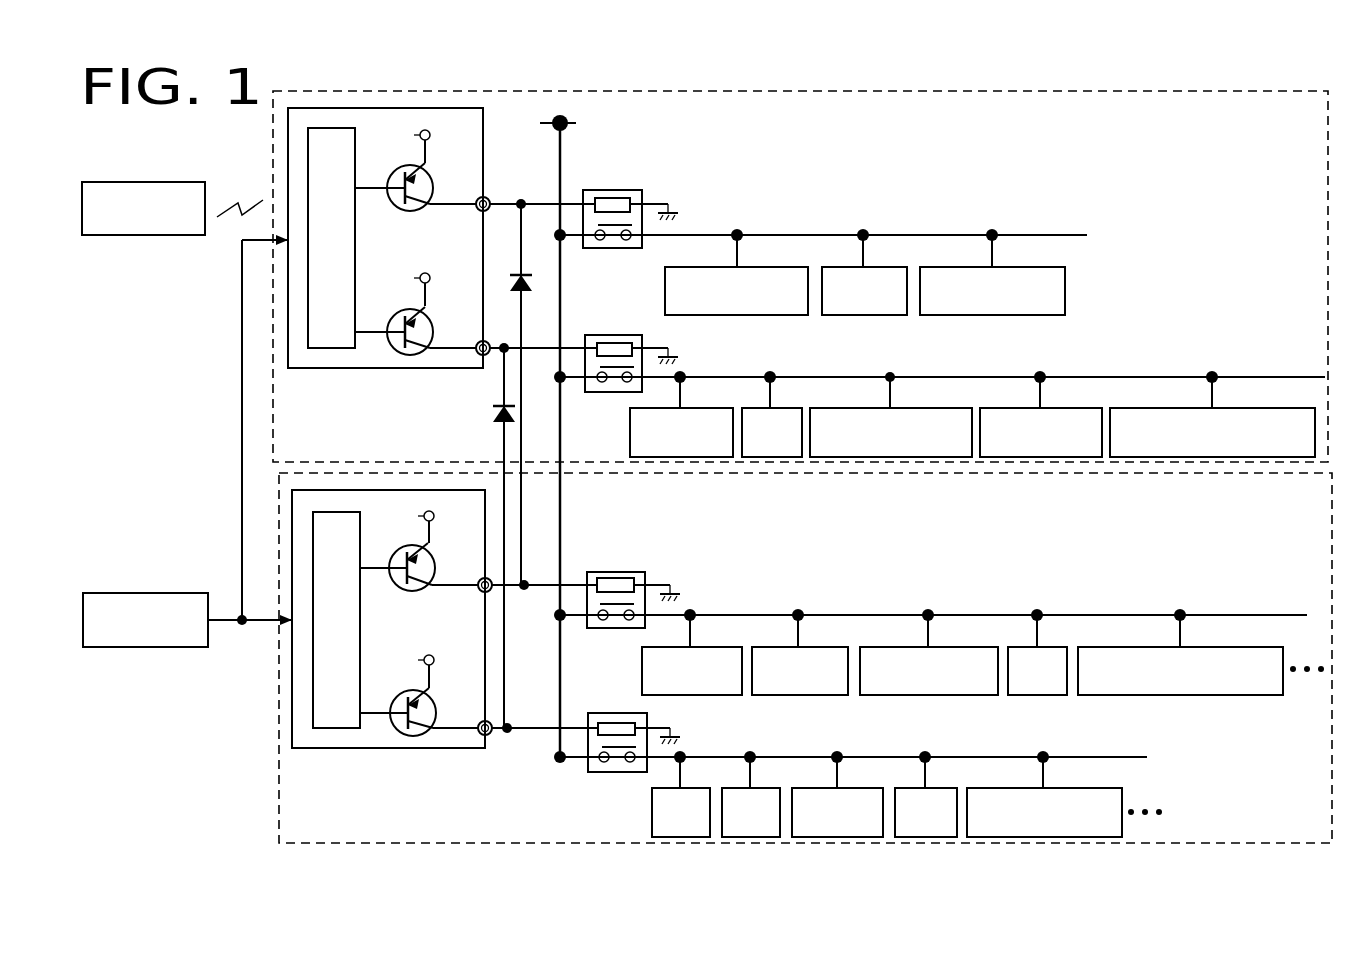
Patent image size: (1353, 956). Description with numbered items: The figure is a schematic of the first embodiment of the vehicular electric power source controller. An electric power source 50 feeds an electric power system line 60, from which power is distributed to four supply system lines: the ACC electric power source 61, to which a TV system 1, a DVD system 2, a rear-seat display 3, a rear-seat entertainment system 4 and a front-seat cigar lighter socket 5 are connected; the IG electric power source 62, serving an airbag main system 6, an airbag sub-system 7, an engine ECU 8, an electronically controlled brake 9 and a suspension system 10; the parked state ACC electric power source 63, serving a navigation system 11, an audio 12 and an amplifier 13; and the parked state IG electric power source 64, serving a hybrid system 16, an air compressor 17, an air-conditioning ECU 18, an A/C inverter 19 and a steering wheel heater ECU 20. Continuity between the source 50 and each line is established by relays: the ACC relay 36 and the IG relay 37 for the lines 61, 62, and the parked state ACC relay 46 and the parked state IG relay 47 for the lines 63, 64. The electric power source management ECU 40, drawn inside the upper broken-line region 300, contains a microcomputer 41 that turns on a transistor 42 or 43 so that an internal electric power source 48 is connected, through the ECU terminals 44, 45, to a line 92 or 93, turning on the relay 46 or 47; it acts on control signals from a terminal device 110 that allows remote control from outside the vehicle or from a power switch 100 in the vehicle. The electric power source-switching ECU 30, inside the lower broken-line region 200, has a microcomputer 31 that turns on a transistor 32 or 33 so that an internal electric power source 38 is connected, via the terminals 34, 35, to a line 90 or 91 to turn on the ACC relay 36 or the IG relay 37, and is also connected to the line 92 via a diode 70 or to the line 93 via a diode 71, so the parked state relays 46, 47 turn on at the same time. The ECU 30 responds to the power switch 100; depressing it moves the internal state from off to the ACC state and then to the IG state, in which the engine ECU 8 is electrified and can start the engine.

The TV system 1 is at (716, 647).
The DVD system 2 is at (823, 647).
The rear-seat display 3 is at (959, 647).
The rear-seat entertainment system (RSE) 4 is at (1051, 647).
The front-seat cigar lighter socket 5 is at (1226, 647).
The airbag main system (A/B Main) 6 is at (696, 788).
The airbag sub-system (A/B Sub) 7 is at (771, 788).
The engine ECU 8 is at (866, 788).
The electronically controlled brake (ECB) 9 is at (941, 788).
The suspension system 10 is at (1076, 788).
The navigation system 11 is at (751, 267).
The audio 12 is at (879, 267).
The amplifier 13 is at (1021, 267).
The hybrid (HV) system 16 is at (706, 408).
The air compressor (A/C) 17 is at (786, 408).
The air-conditioning ECU 18 is at (931, 408).
The A/C inverter 19 is at (1066, 408).
The steering wheel heater ECU 20 is at (1249, 408).
The electric power source-switching ECU 30 is at (390, 770).
The microcomputer 31 is at (361, 617).
The transistor 32 is at (393, 556).
The transistor 33 is at (392, 700).
The ACC output terminal 34 is at (478, 581).
The IG output terminal 35 is at (478, 724).
The ACC relay 36 is at (613, 628).
The IG relay 37 is at (618, 772).
The internal electric power source 38 is at (434, 516).
The electric power source management ECU 40 is at (378, 388).
The microcomputer 41 is at (356, 236).
The transistor 42 is at (400, 170).
The transistor 43 is at (400, 313).
The output terminal 44 is at (476, 200).
The output terminal 45 is at (476, 344).
The parked state ACC relay 46 is at (627, 248).
The parked state IG relay 47 is at (611, 392).
The internal electric power source 48 is at (430, 135).
The electric power source 50 is at (572, 117).
The electric power system line 60 is at (562, 142).
The ACC electric power source supply system line 61 is at (752, 613).
The IG electric power source supply system line 62 is at (720, 757).
The parked state ACC electric power source supply system line 63 is at (788, 233).
The parked state IG electric power source supply system line 64 is at (845, 377).
The diode 70 is at (518, 296).
The diode 71 is at (496, 410).
The line 90 is at (540, 585).
The line 91 is at (540, 728).
The line 92 is at (532, 202).
The line 93 is at (538, 348).
The power switch 100 is at (185, 593).
The terminal device 110 is at (178, 182).
The lower power source system 200 is at (1196, 843).
The upper power source system 300 is at (1202, 91).